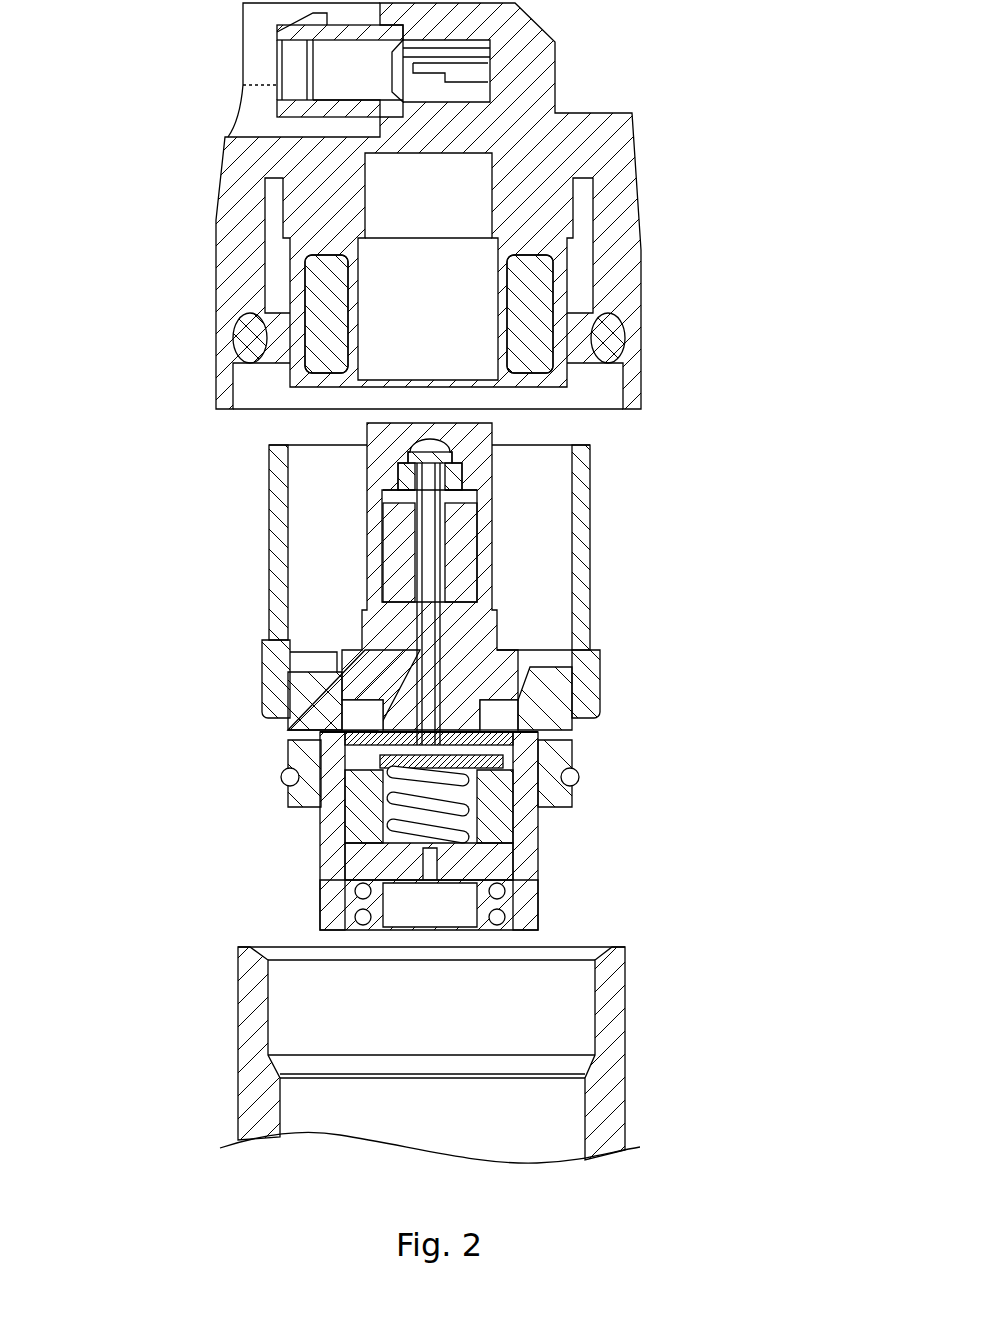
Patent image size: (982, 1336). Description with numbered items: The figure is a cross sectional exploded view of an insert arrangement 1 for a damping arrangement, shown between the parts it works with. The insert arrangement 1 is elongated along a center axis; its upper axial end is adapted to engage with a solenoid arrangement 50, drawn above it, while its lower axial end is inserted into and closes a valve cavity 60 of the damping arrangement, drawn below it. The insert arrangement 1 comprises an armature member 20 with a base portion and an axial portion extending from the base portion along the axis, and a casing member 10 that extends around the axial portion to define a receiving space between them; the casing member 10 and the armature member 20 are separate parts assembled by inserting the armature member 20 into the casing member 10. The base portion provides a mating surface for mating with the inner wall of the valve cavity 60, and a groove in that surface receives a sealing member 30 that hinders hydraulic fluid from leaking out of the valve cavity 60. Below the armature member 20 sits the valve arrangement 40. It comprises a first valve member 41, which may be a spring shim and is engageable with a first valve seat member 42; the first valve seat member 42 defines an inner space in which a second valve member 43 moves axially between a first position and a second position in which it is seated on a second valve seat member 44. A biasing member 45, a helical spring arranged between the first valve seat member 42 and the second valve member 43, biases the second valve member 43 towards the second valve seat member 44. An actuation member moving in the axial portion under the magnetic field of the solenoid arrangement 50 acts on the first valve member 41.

The insert arrangement 1 is at (623, 709).
The casing member 10 is at (268, 615).
The armature member 20 is at (290, 732).
The sealing member 30 is at (284, 775).
The valve arrangement 40 is at (501, 831).
The first valve member 41 is at (487, 730).
The first valve seat member 42 is at (545, 745).
The second valve member 43 is at (345, 838).
The second valve seat member 44 is at (540, 913).
The biasing member 45 is at (385, 772).
The solenoid arrangement 50 is at (652, 353).
The valve cavity 60 is at (320, 990).